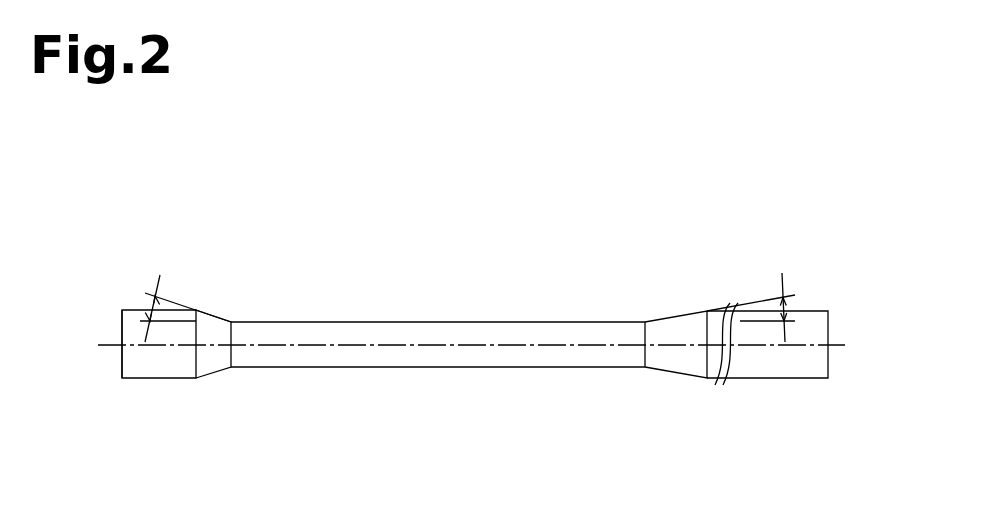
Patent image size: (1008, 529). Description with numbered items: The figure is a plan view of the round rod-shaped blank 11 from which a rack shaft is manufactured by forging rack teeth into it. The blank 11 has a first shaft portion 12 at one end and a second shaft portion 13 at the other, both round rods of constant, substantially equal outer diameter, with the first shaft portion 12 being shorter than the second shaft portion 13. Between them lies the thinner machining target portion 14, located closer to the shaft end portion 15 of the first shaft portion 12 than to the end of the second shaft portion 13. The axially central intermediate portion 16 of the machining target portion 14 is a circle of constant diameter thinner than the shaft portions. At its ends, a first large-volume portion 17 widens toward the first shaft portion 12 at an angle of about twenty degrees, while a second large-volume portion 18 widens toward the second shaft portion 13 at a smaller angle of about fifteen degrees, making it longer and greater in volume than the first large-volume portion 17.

The blank 11 is at (118, 198).
The first shaft portion 12 is at (162, 380).
The second shaft portion 13 is at (815, 380).
The machining target portion 14 is at (415, 367).
The shaft end portion 15 is at (132, 325).
The intermediate portion 16 is at (413, 322).
The first large-volume portion 17 is at (205, 316).
The second large-volume portion 18 is at (690, 315).